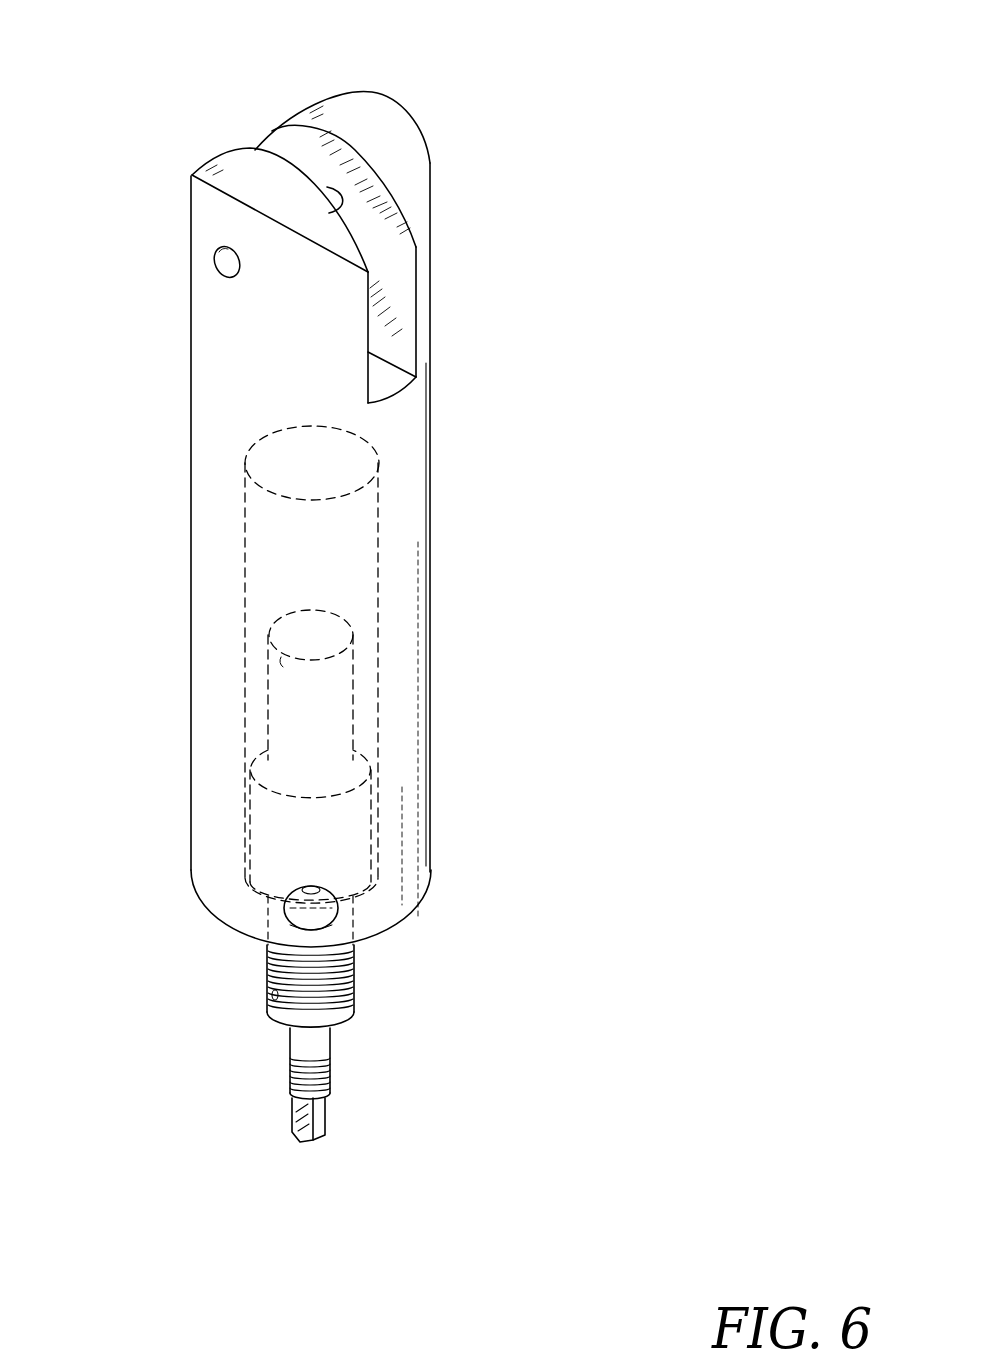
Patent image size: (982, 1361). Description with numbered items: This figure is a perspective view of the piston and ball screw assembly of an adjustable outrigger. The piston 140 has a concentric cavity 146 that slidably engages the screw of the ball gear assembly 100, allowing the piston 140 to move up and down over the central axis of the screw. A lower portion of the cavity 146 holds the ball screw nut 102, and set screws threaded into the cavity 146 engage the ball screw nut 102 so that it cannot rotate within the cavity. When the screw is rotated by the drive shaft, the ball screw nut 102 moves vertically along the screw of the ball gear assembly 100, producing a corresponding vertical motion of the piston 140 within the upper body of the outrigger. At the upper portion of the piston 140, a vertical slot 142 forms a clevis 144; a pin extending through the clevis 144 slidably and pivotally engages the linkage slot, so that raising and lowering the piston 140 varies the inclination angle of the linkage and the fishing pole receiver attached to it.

The ball gear assembly 100 is at (352, 973).
The ball screw nut 102 is at (250, 833).
The piston 140 is at (430, 437).
The vertical slot 142 is at (293, 143).
The clevis 144 is at (203, 212).
The concentric cavity 146 is at (243, 610).